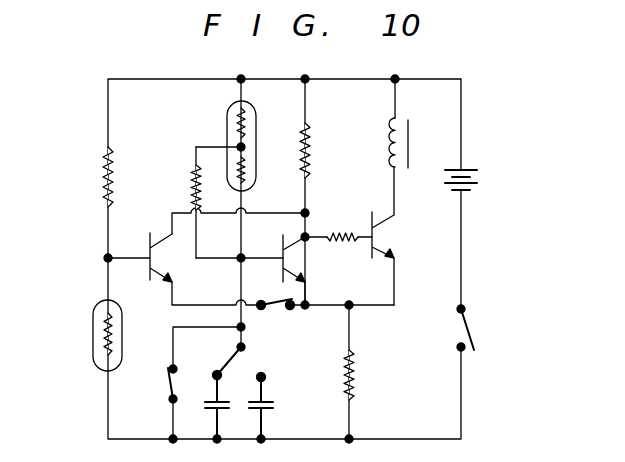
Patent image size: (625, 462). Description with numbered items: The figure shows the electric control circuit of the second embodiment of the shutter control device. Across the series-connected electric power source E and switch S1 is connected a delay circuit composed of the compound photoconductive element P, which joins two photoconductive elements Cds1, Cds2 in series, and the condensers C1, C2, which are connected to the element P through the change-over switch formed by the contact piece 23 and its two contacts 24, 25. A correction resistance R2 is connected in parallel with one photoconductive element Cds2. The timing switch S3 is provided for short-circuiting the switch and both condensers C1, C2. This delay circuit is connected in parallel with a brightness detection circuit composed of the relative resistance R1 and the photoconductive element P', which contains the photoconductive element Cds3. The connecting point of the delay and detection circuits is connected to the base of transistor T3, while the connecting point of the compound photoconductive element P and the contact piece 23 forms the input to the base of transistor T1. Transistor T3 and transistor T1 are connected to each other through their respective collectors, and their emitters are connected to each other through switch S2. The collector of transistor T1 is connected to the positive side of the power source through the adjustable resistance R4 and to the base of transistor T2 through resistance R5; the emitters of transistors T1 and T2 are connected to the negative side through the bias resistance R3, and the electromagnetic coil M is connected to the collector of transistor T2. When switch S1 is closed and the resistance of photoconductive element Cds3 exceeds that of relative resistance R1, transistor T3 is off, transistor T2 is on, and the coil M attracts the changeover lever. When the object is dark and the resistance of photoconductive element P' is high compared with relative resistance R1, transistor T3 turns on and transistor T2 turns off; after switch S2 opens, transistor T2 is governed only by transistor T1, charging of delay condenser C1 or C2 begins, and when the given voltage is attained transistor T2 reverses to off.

The relative resistance R1 is at (122, 175).
The correction resistance R2 is at (181, 202).
The bias resistance R3 is at (363, 372).
The adjustable resistance R4 is at (321, 150).
The resistance R5 is at (338, 224).
The photoconductive element Cds1 is at (227, 128).
The photoconductive element Cds2 is at (268, 183).
The photoconductive element Cds3 is at (100, 333).
The compound photoconductive element P is at (253, 141).
The photoconductive element P' is at (124, 331).
The transistor T1 is at (300, 270).
The transistor T2 is at (395, 236).
The transistor T3 is at (140, 252).
The electromagnetic coil M is at (403, 132).
The electric power source E is at (468, 183).
The switch S1 is at (479, 328).
The switch S2 is at (276, 317).
The timing switch S3 is at (190, 383).
The condenser C1 is at (271, 408).
The condenser C2 is at (206, 407).
The contact piece 23 is at (233, 364).
The contact 24 is at (263, 378).
The contact 25 is at (215, 373).